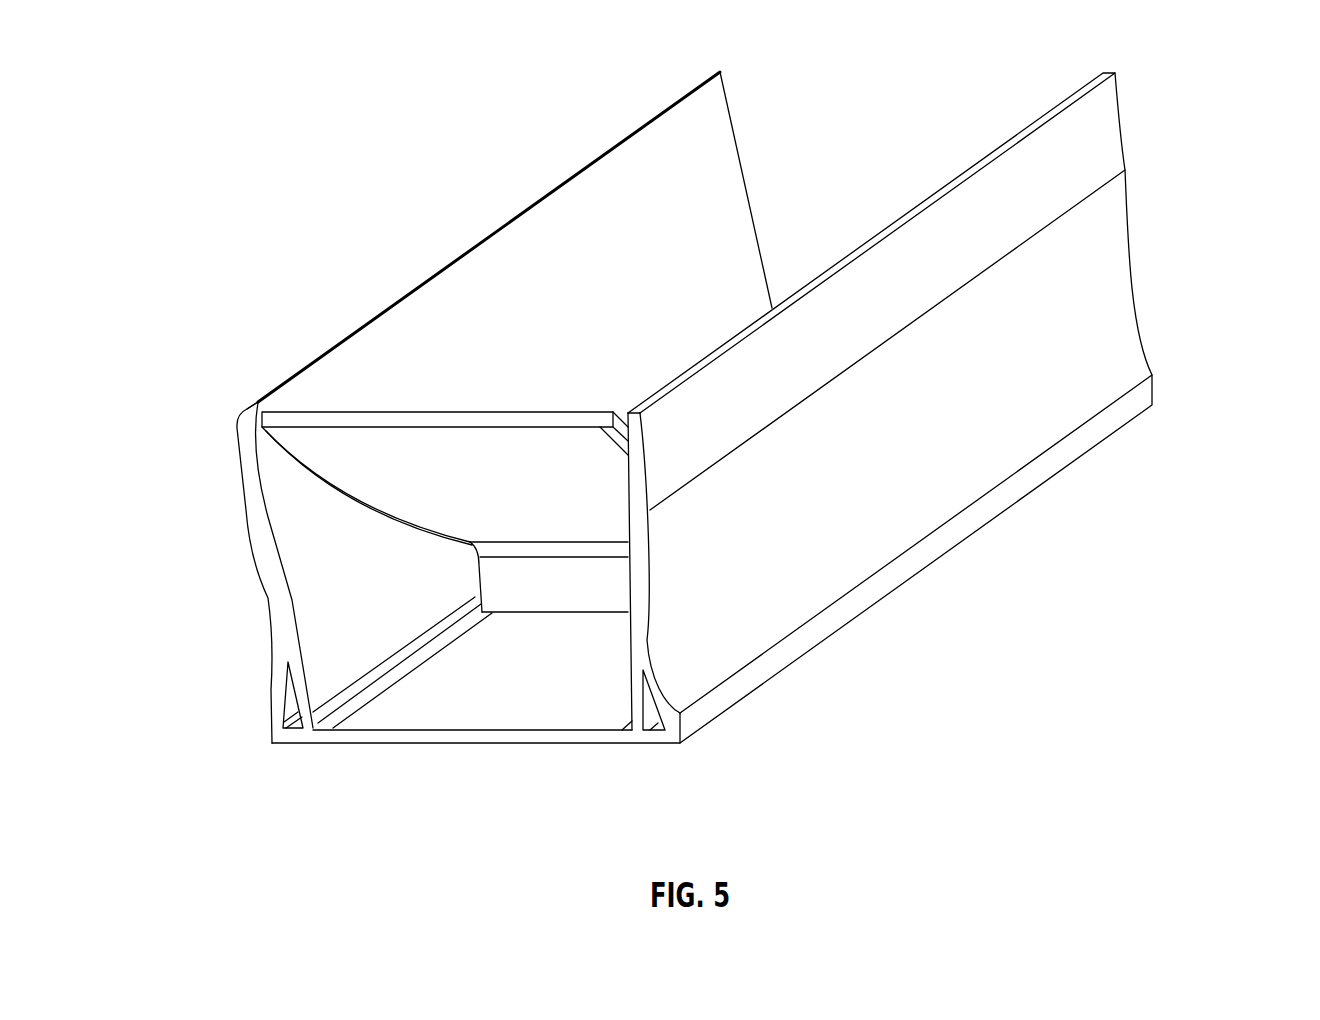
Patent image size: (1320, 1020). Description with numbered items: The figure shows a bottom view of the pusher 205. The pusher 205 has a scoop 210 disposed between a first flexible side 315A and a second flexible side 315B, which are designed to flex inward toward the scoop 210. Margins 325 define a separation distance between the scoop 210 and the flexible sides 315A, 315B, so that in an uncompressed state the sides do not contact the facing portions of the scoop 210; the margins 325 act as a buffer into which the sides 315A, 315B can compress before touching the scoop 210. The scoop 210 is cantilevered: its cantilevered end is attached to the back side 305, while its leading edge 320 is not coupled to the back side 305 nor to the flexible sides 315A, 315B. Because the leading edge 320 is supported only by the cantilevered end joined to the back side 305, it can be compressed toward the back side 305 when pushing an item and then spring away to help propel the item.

The pusher 205 is at (318, 93).
The scoop 210 is at (398, 473).
The back side 305 is at (570, 744).
The first flexible side 315A is at (518, 216).
The second flexible side 315B is at (1097, 137).
The leading edge 320 is at (363, 412).
The margin 325 is at (258, 400).